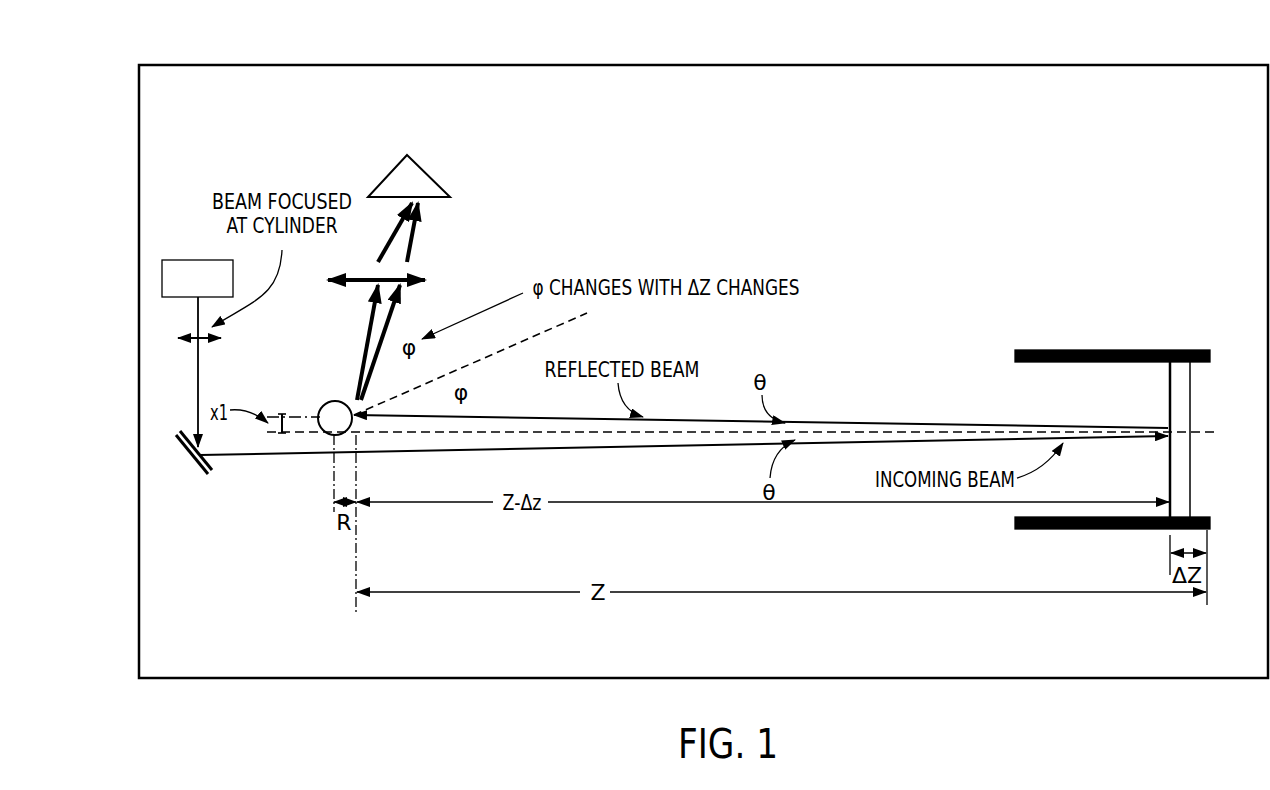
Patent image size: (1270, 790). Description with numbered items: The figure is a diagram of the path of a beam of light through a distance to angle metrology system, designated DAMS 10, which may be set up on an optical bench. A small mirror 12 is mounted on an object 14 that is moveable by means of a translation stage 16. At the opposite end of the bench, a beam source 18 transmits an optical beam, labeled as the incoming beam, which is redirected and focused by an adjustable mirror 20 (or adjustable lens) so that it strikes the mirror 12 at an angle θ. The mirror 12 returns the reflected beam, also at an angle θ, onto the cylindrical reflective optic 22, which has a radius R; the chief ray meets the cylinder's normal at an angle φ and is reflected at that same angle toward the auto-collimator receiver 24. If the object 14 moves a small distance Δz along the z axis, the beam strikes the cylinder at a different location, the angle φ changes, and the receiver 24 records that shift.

The DAMS 10 is at (655, 65).
The small mirror 12 is at (1167, 403).
The object 14 is at (1182, 405).
The translation stage 16 is at (1107, 348).
The beam source 18 is at (198, 272).
The adjustable mirror 20 is at (187, 463).
The cylindrical reflective optic 22 is at (327, 434).
The auto-collimator receiver 24 is at (430, 170).